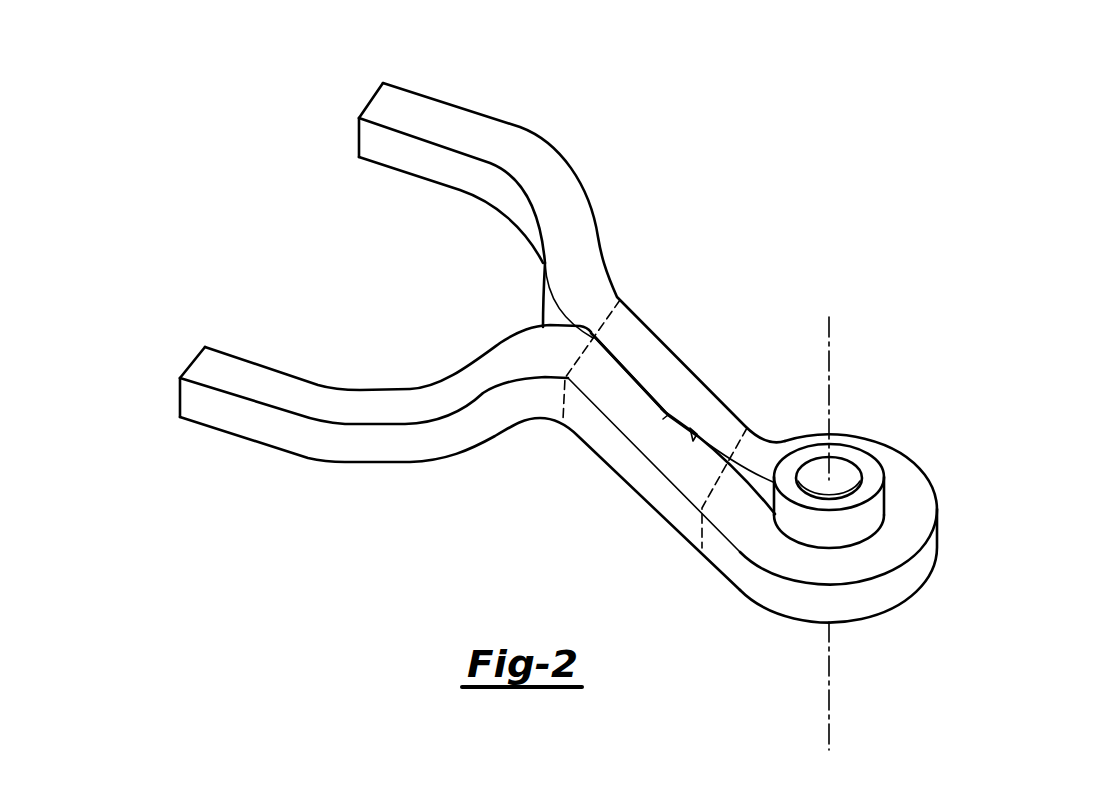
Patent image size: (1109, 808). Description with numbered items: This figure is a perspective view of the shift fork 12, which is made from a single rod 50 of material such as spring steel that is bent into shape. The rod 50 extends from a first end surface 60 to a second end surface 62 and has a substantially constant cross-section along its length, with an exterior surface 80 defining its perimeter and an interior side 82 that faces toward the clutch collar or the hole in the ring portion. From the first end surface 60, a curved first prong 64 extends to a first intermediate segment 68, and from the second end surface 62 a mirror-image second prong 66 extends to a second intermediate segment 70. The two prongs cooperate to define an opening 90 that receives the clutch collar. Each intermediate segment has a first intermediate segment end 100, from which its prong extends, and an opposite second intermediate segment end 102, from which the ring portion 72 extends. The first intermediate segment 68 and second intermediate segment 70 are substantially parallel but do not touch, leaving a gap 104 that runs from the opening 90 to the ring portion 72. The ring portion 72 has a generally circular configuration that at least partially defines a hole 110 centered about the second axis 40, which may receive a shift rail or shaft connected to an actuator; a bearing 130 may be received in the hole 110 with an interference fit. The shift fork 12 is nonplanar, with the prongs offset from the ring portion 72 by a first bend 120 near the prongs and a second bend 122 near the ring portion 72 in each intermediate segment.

The shift fork 12 is at (767, 197).
The second axis 40 is at (829, 691).
The rod 50 is at (383, 83).
The first end surface 60 is at (180, 397).
The second end surface 62 is at (359, 118).
The first prong 64 is at (377, 466).
The second prong 66 is at (573, 174).
The first intermediate segment 68 is at (657, 508).
The second intermediate segment 70 is at (678, 357).
The ring portion 72 is at (900, 607).
The exterior surface 80 is at (205, 347).
The interior side 82 is at (437, 157).
The opening 90 is at (315, 216).
The first intermediate segment end 100 is at (610, 319).
The second intermediate segment end 102 is at (748, 430).
The gap 104 is at (648, 382).
The hole 110 is at (878, 523).
The first bend 120 is at (617, 290).
The second bend 122 is at (755, 432).
The bearing 130 is at (860, 450).